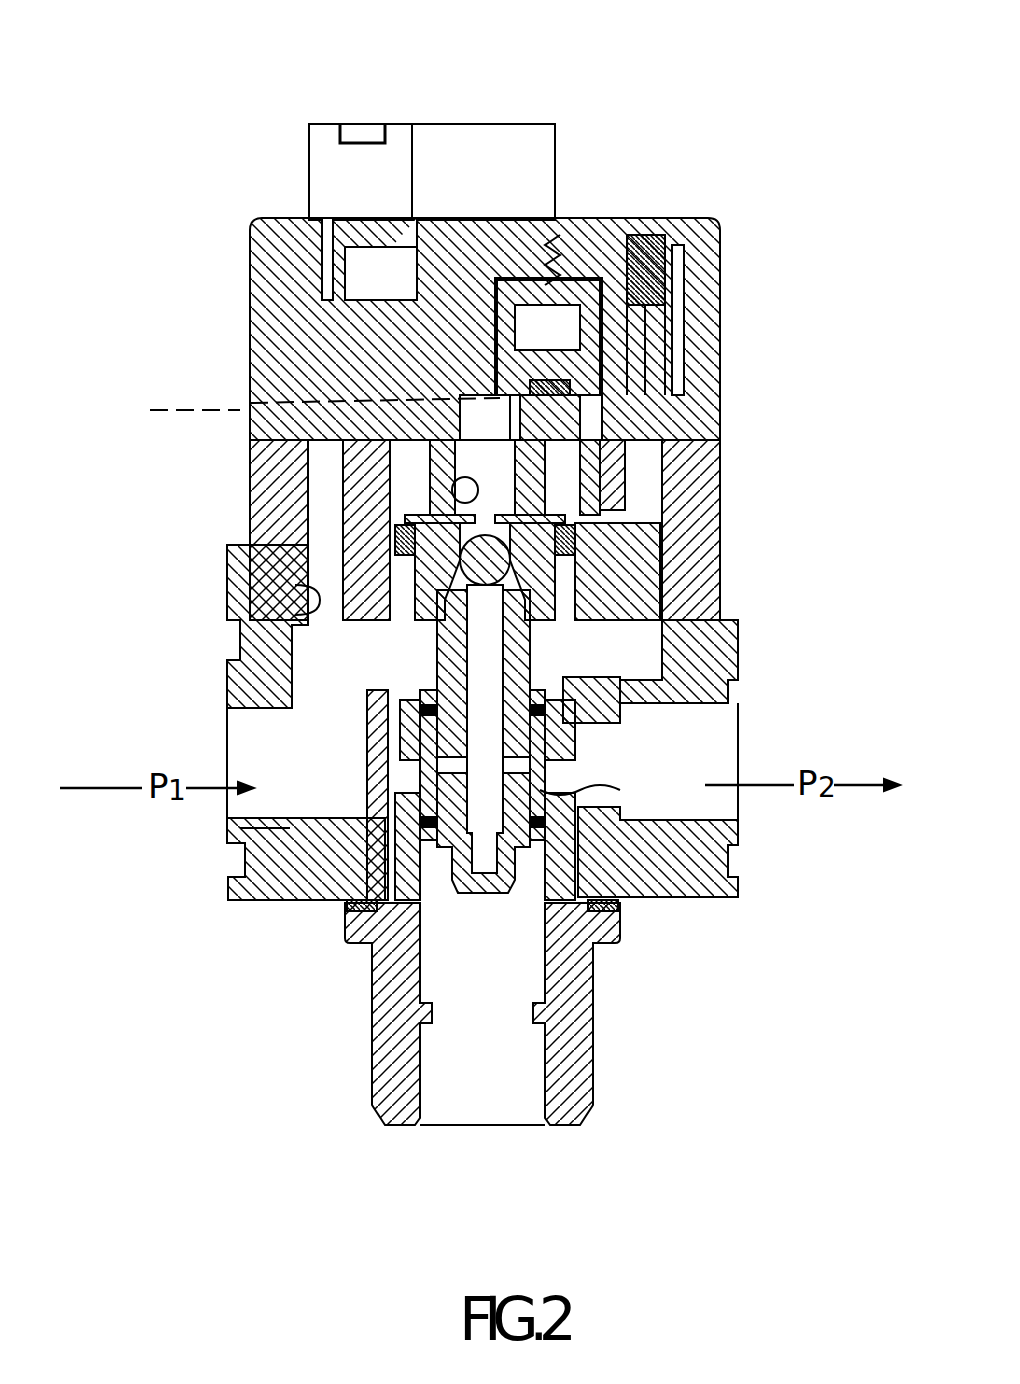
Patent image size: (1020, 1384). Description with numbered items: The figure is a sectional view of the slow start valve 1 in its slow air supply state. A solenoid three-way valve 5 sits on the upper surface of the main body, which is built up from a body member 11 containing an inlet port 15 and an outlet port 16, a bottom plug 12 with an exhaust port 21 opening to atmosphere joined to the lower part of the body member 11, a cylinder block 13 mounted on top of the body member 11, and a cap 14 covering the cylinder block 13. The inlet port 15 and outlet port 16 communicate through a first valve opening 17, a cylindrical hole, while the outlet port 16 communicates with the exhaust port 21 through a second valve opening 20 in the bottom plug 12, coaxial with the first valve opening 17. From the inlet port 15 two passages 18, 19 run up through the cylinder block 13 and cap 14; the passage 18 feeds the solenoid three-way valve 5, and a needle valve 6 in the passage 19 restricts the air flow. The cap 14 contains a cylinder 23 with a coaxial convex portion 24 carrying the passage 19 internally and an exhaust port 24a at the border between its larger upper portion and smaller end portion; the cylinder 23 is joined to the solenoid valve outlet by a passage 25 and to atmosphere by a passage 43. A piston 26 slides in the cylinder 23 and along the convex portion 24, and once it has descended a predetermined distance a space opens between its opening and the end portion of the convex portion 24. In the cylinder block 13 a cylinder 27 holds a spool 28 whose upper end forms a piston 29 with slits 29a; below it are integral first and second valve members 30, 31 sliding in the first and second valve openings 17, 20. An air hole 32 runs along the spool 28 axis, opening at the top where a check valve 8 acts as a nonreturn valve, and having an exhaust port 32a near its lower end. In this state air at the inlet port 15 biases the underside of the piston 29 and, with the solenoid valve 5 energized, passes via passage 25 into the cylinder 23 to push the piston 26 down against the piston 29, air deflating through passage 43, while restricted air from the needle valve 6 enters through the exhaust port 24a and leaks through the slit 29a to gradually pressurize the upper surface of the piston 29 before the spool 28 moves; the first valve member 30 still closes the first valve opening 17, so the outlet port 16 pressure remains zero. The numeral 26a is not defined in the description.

The slow start valve 1 is at (614, 98).
The solenoid three-way valve 5 is at (396, 128).
The passage 25 is at (406, 252).
The passage 19 is at (546, 270).
The cap 14 is at (252, 254).
The needle valve 6 is at (672, 302).
The convex portion 24 is at (496, 412).
The cylinder 23 is at (515, 415).
The exhaust port 24a is at (470, 402).
The piston 26 is at (555, 388).
The passage 43 is at (301, 418).
The cylinder block 13 is at (256, 470).
The slit 29a is at (565, 470).
The passage hole 26a is at (455, 498).
The piston 29 is at (580, 540).
The check valve 8 is at (612, 588).
The passage 18 is at (296, 598).
The body member 11 is at (240, 652).
The spool 28 is at (518, 605).
The cylinder 27 is at (395, 618).
The first valve member 30 is at (548, 680).
The air hole 32 is at (396, 686).
The exhaust port 32a is at (440, 768).
The first valve opening 17 is at (535, 718).
The second valve member 31 is at (590, 792).
The inlet port 15 is at (236, 822).
The outlet port 16 is at (740, 822).
The second valve opening 20 is at (552, 905).
The bottom plug 12 is at (374, 1040).
The exhaust port 21 is at (478, 1108).